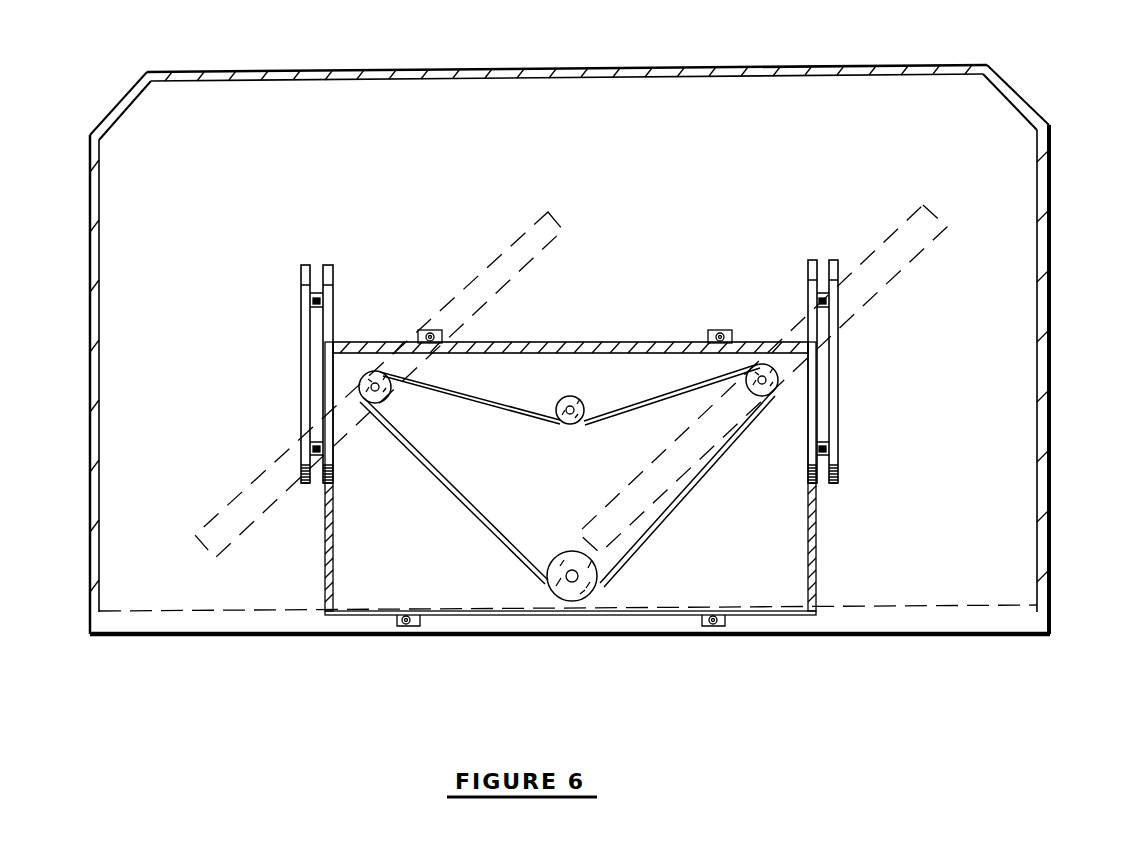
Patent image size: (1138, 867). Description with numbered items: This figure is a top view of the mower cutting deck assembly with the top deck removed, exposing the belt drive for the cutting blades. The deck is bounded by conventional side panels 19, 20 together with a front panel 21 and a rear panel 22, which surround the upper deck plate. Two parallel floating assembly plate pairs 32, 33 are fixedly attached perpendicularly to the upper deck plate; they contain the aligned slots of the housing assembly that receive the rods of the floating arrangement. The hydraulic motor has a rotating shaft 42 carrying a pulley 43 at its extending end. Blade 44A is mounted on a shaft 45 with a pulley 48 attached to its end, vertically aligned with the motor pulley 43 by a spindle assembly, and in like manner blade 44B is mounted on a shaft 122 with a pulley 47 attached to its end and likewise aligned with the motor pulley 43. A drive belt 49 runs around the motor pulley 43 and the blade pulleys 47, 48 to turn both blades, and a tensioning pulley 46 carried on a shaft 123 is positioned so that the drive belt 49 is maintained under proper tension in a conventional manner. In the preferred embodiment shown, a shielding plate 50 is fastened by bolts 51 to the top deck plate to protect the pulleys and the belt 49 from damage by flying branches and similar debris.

The side panel 19 is at (92, 407).
The side panel 20 is at (1040, 440).
The front panel 21 is at (1003, 620).
The rear panel 22 is at (570, 72).
The floating assembly plate pair 32 is at (304, 355).
The floating assembly plate pair 33 is at (835, 420).
The rotating shaft 42 is at (572, 582).
The pulley 43 is at (564, 599).
The blade 44A is at (930, 233).
The blade 44B is at (551, 212).
The shaft 45 is at (765, 378).
The tensioning pulley 46 is at (568, 399).
The pulley 47 is at (384, 366).
The pulley 48 is at (767, 395).
The drive belt 49 is at (660, 520).
The shielding plate 50 is at (631, 345).
The bolt 51 is at (431, 332).
The shaft 122 is at (375, 387).
The shaft 123 is at (565, 405).